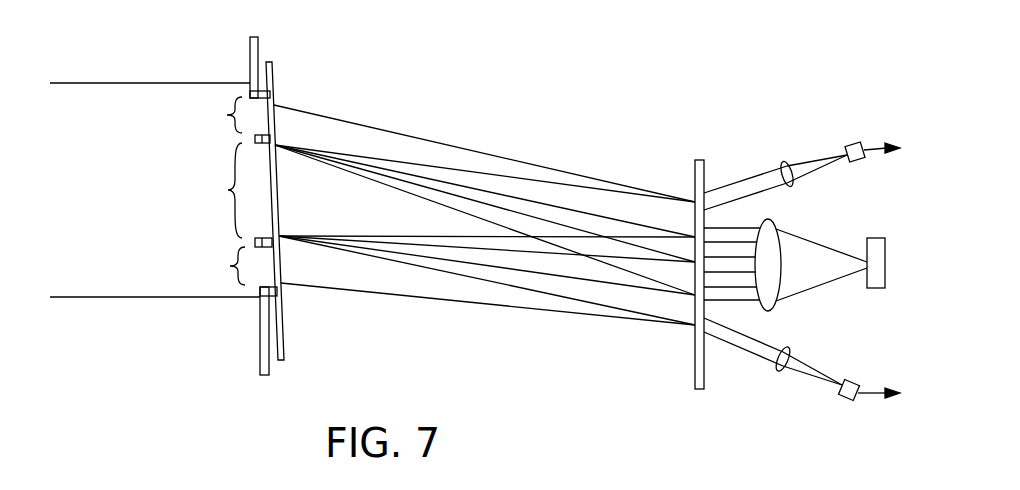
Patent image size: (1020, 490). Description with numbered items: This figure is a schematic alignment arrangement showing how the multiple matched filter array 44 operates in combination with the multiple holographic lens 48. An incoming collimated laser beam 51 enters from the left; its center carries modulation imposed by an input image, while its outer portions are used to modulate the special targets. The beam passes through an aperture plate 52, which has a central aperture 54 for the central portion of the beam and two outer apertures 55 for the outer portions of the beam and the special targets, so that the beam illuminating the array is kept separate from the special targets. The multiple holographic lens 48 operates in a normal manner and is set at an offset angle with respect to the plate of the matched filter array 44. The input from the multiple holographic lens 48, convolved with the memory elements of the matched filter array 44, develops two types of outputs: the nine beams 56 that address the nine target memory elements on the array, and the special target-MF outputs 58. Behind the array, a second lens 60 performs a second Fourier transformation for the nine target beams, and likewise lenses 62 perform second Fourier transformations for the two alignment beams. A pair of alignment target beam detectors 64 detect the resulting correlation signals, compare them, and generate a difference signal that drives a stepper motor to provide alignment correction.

The multiple matched filter array 44 is at (695, 188).
The multiple holographic lens 48 is at (273, 70).
The incoming collimated laser beam 51 is at (118, 83).
The aperture plate 52 is at (250, 52).
The central aperture 54 is at (237, 195).
The outer apertures 55 is at (228, 191).
The nine beams 56 is at (425, 188).
The special target-MF outputs 58 is at (725, 191).
The second lens 60 is at (773, 221).
The lenses 62 is at (784, 160).
The alignment target beam detectors 64 is at (849, 146).